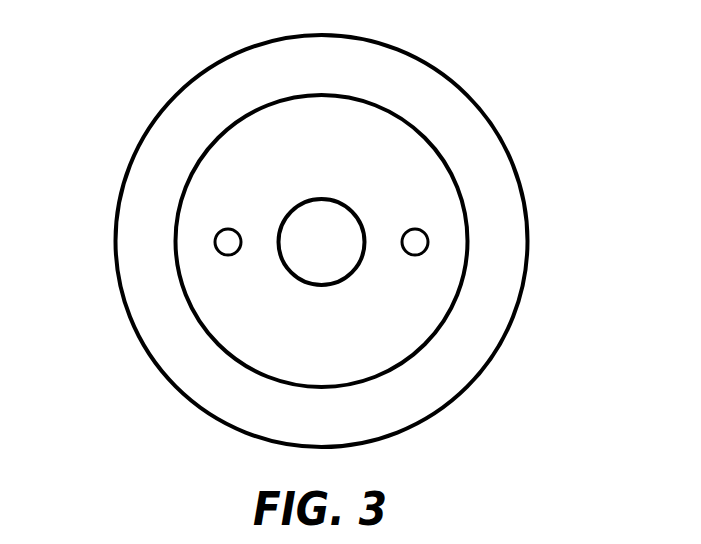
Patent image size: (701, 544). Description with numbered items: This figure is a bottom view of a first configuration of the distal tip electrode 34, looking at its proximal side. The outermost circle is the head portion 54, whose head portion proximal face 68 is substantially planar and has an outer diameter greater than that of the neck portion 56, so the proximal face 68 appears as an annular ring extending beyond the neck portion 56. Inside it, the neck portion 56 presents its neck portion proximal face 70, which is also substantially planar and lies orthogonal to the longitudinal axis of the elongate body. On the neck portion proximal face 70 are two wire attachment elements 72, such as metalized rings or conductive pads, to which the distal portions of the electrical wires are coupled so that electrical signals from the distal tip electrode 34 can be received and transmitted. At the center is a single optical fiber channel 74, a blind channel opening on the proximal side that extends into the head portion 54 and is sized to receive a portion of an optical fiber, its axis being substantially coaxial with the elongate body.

The distal tip electrode 34 is at (152, 47).
The head portion 54 is at (493, 128).
The neck portion 56 is at (463, 203).
The head portion proximal face 68 is at (425, 102).
The neck portion proximal face 70 is at (232, 298).
The wire attachment elements 72 is at (227, 243).
The optical fiber channel 74 is at (328, 238).